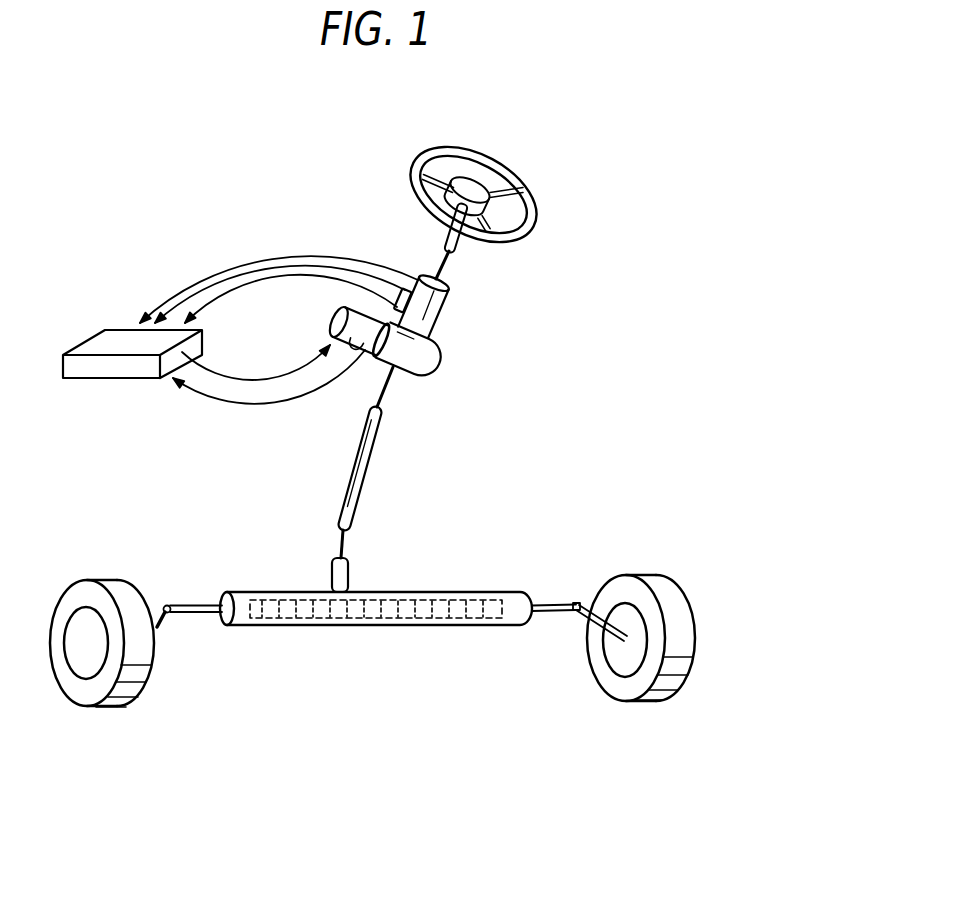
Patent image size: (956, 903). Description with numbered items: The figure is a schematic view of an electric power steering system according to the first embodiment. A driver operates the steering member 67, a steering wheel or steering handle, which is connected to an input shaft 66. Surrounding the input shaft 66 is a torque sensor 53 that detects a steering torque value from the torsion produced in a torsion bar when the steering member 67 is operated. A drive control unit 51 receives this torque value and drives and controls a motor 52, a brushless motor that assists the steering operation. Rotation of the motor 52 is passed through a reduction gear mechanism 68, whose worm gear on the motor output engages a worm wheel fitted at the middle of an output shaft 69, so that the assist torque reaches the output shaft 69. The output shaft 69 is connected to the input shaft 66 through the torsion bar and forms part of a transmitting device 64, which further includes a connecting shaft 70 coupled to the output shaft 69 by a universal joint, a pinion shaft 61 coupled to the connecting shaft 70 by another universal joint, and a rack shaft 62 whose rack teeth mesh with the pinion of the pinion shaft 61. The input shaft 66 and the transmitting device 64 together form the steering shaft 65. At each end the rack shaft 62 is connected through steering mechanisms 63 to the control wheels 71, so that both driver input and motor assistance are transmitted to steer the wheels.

The drive control unit 51 is at (118, 335).
The motor 52 is at (330, 322).
The torque sensor 53 is at (405, 288).
The pinion shaft 61 is at (350, 582).
The rack shaft 62 is at (462, 590).
The steering mechanisms 63 is at (158, 588).
The transmitting device 64 is at (347, 462).
The steering shaft 65 is at (228, 463).
The input shaft 66 is at (448, 264).
The steering member 67 is at (540, 208).
The reduction gear mechanism 68 is at (436, 366).
The output shaft 69 is at (400, 392).
The connecting shaft 70 is at (381, 438).
The control wheels 71 is at (112, 710).